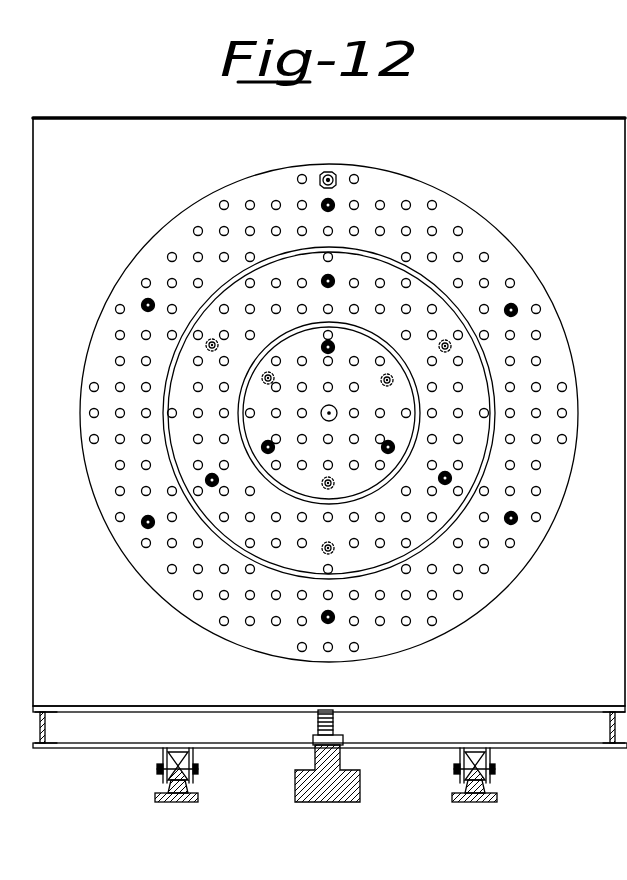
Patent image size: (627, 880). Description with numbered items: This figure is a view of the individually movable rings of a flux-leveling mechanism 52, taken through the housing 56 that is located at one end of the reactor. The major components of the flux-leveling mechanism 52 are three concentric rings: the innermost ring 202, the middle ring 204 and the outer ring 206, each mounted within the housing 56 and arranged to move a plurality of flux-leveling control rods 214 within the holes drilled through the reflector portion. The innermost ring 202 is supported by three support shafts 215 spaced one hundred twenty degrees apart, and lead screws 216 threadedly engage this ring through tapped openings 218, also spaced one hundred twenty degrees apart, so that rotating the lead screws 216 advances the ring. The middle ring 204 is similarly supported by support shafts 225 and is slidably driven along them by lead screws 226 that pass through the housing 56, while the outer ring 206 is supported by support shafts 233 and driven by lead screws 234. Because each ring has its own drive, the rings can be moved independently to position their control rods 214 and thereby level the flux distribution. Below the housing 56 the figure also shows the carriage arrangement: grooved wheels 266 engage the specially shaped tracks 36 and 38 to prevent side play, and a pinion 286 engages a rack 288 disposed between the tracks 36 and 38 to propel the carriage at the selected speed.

The track 36 is at (195, 793).
The track 38 is at (494, 793).
The flux-leveling mechanism 52 is at (455, 197).
The housing 56 is at (560, 119).
The innermost ring 202 is at (253, 426).
The middle ring 204 is at (170, 457).
The outer ring 206 is at (166, 585).
The flux-leveling control rod 214 is at (330, 172).
The support shaft 215 is at (334, 342).
The lead screw 216 is at (275, 379).
The tapped opening 218 is at (393, 381).
The support shaft 225 is at (327, 288).
The lead screw 226 is at (207, 346).
The support shaft 233 is at (326, 211).
The lead screw 234 is at (144, 303).
The grooved wheel 266 is at (157, 768).
The pinion 286 is at (338, 722).
The rack 288 is at (300, 775).